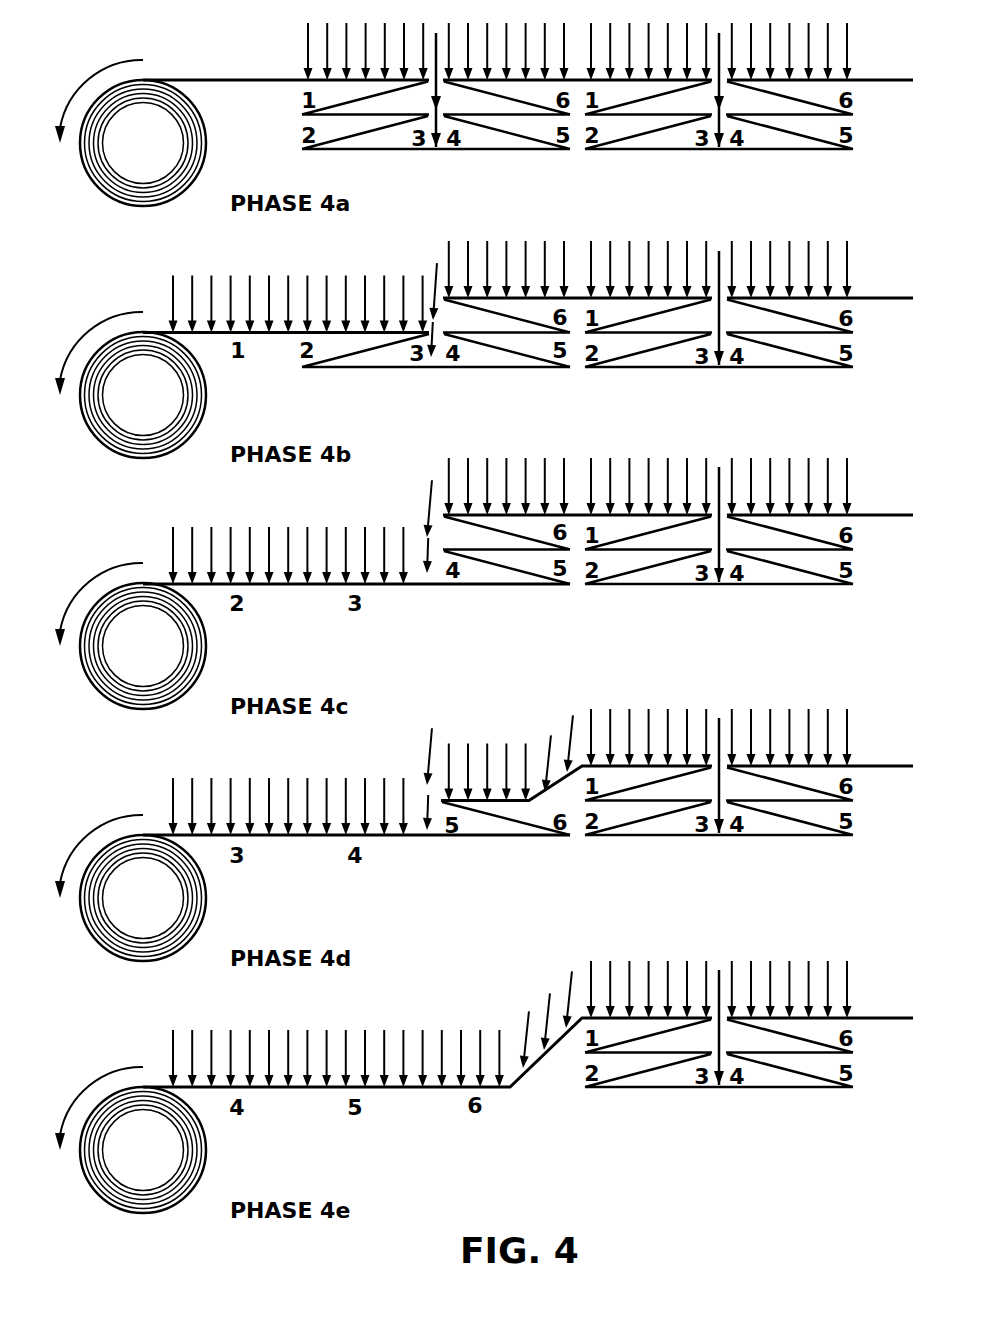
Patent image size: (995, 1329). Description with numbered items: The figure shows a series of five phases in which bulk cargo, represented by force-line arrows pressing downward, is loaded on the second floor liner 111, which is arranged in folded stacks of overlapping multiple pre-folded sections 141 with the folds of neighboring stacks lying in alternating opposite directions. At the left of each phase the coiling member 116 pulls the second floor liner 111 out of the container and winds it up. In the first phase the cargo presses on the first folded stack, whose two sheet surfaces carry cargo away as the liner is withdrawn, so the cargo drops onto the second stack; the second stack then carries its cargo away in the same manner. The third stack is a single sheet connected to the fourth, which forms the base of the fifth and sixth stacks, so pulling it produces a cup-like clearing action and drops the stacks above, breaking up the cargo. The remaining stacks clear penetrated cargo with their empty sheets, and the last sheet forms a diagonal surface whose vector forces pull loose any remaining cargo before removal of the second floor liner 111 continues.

The second floor liner 111 is at (242, 80).
The coiling member 116 is at (135, 170).
The pre-folded sections 141 is at (520, 142).